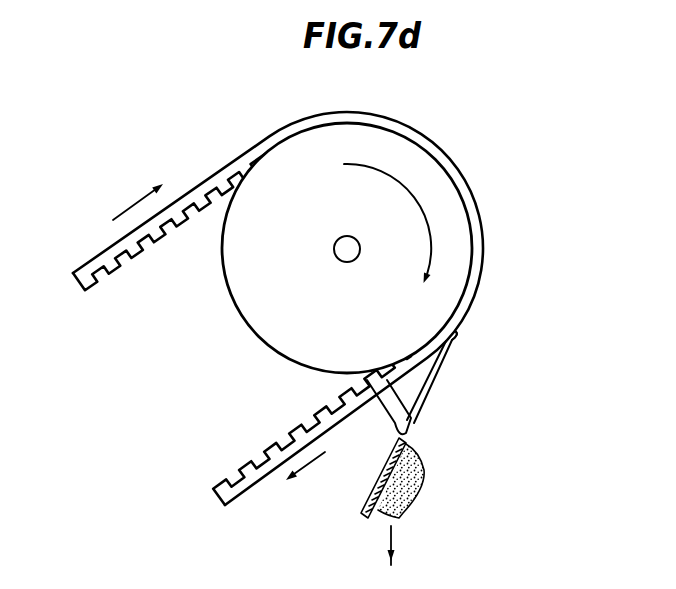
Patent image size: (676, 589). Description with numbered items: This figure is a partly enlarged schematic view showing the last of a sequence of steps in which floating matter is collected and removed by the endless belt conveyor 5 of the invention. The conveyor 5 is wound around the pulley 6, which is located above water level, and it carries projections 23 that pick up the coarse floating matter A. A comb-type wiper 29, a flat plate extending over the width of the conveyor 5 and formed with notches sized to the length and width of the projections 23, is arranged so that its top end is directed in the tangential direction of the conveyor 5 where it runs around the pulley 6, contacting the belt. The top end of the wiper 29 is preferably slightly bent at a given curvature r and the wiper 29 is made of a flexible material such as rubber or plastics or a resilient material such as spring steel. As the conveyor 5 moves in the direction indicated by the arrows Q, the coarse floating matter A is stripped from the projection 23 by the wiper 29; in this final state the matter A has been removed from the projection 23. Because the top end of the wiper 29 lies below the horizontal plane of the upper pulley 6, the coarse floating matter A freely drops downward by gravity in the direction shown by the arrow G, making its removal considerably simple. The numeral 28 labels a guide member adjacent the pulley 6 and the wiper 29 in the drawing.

The endless belt conveyor 5 is at (92, 257).
The pulley 6 is at (289, 157).
The projection 23 is at (404, 412).
The guide strip / stripper 28 is at (444, 381).
The comb-type wiper 29 is at (361, 496).
The coarse floating matter A is at (418, 479).
The belt travel direction Q is at (152, 190).
The arrow (direction of gravity drop) G is at (389, 551).
The curvature r is at (459, 336).